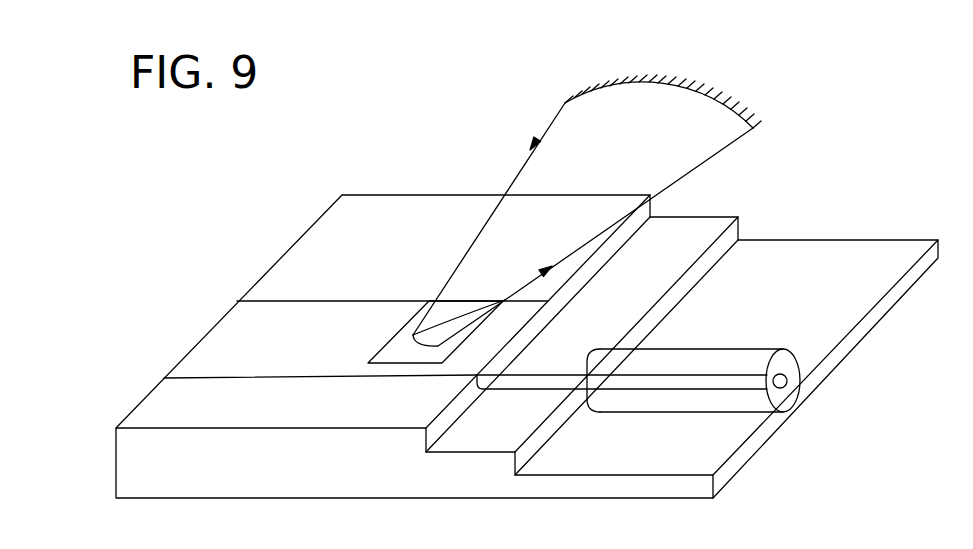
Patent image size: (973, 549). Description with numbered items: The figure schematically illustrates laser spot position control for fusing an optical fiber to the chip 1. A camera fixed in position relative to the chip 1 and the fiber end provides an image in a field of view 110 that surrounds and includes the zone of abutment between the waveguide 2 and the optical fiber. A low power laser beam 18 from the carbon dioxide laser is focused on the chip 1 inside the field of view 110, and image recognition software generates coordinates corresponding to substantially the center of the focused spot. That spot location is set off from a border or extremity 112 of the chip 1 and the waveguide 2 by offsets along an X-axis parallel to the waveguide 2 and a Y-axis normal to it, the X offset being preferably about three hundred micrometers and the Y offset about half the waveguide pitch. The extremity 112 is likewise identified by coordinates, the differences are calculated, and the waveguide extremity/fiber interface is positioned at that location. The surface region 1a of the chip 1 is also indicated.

The chip 1 is at (96, 460).
The top surface layer of substrate 1a is at (150, 362).
The field of view 110 is at (387, 340).
The border of the chip 112 is at (574, 304).
The waveguide 2 is at (796, 434).
The low power laser beam 18 is at (808, 69).